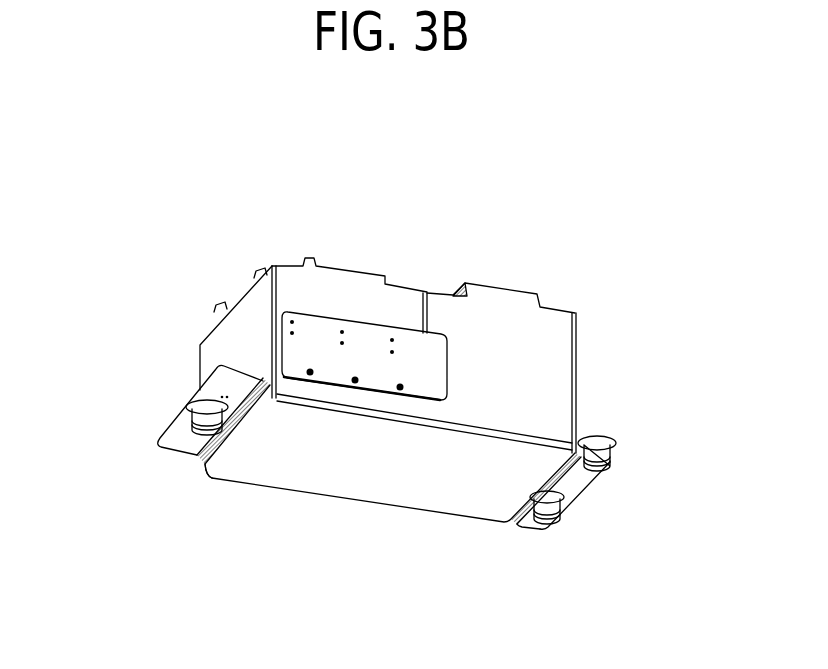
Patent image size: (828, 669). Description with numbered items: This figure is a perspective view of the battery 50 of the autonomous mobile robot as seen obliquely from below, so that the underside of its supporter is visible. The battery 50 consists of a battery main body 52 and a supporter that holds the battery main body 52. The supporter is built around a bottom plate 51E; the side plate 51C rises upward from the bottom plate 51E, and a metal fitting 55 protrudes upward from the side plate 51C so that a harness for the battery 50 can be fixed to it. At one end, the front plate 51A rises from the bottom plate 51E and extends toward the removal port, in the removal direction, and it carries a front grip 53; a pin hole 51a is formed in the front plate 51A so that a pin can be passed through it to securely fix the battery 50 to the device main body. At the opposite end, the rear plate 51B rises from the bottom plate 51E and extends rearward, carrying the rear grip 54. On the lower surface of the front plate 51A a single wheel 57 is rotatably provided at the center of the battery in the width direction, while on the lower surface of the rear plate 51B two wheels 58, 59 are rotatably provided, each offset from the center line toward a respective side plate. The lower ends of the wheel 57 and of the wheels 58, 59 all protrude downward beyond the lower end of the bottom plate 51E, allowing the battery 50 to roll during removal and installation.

The battery 50 is at (508, 228).
The battery main body 52 is at (352, 262).
The metal fitting 55 is at (317, 327).
The side plate 51C is at (528, 418).
The bottom plate 51E is at (302, 478).
The pin hole 51a is at (242, 384).
The front plate 51A is at (165, 429).
The rear plate 51B is at (583, 483).
The front grip 53 is at (192, 392).
The rear grip 54 is at (584, 430).
The wheel 57 is at (192, 436).
The wheel 58 is at (546, 532).
The wheel 59 is at (604, 477).